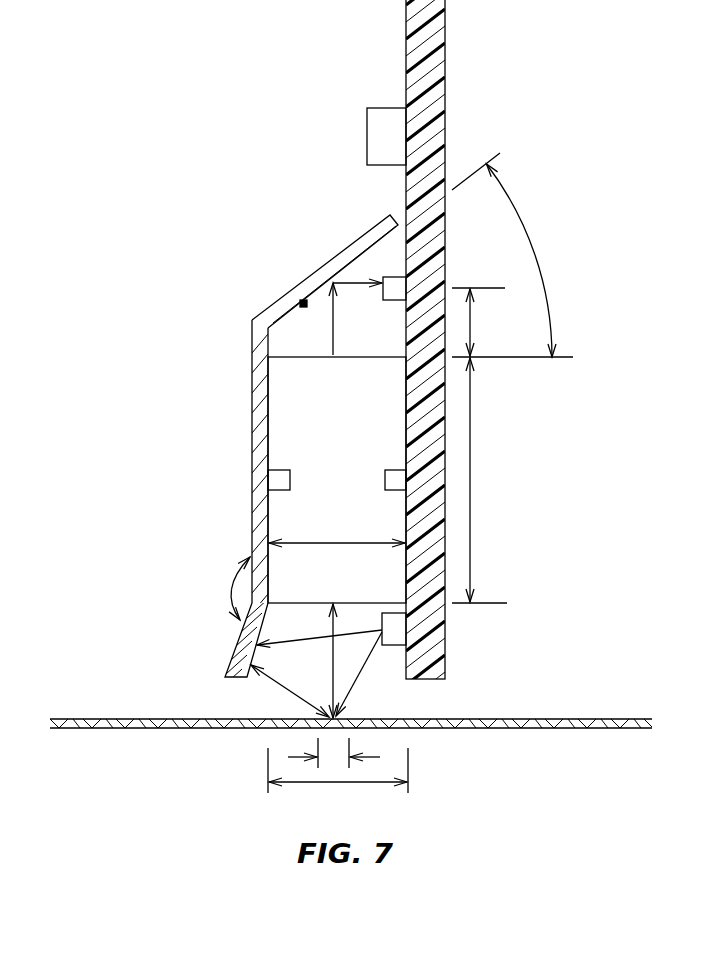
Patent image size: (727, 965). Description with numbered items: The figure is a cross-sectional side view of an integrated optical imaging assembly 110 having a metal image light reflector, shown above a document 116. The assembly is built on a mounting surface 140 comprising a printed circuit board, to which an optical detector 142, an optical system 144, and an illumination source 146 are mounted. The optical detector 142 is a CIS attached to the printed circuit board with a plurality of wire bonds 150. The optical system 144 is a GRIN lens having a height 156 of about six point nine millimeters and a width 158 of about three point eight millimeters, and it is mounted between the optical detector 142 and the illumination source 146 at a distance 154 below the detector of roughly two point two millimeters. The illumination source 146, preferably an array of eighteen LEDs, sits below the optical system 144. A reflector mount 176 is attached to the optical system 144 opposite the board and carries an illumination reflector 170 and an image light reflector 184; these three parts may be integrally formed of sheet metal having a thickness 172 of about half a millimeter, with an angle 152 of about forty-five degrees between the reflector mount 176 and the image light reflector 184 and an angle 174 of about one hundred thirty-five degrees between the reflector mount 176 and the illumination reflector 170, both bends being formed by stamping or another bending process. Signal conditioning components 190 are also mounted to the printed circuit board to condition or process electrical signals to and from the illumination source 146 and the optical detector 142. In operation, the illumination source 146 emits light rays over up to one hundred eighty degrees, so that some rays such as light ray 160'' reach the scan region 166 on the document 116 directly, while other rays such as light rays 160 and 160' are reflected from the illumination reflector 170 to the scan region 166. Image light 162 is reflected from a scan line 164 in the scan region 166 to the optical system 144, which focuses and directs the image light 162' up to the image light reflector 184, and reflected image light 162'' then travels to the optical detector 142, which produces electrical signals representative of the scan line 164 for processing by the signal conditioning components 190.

The integrated optical imaging assembly 110 is at (230, 96).
The document 116 is at (556, 719).
The mounting surface 140 is at (445, 33).
The optical detector 142 is at (407, 271).
The optical system 144 is at (353, 453).
The illumination source 146 is at (395, 628).
The wire bonds 150 is at (389, 301).
The angle 152 is at (537, 252).
The distance 154 is at (470, 316).
The height 156 is at (470, 478).
The width 158 is at (350, 545).
The light ray 160 is at (319, 664).
The light ray 160' is at (288, 693).
The light ray 160'' is at (375, 676).
The image light 162 is at (304, 661).
The image light 162' is at (303, 343).
The reflected image light 162'' is at (357, 319).
The scan line 164 is at (297, 757).
The scan region 166 is at (330, 783).
The illumination reflector 170 is at (244, 678).
The thickness 172 is at (238, 637).
The angle 174 is at (232, 590).
The reflector mount 176 is at (252, 473).
The image light reflector 184 is at (302, 301).
The signal conditioning components 190 is at (367, 112).